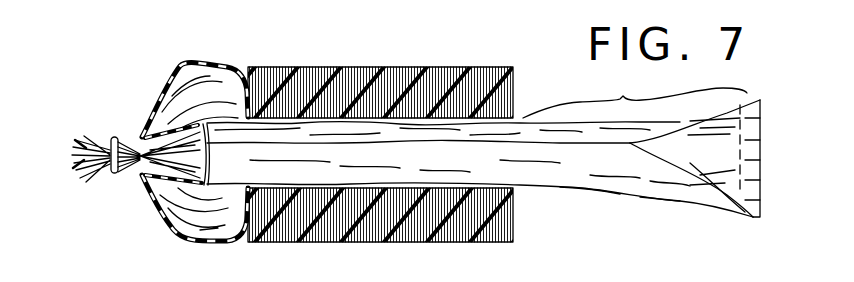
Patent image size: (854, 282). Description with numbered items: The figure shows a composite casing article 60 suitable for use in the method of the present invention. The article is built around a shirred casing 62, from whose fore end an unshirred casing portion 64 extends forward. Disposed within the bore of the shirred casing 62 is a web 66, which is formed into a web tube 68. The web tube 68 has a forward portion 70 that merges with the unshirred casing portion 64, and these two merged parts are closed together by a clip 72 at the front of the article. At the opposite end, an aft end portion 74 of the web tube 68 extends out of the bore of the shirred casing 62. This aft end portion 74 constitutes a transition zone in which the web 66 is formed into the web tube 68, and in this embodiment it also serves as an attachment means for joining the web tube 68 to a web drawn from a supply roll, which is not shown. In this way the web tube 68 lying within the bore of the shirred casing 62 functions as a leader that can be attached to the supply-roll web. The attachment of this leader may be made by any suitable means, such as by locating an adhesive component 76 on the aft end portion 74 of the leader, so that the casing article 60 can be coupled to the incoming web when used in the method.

The composite casing article 60 is at (321, 47).
The shirred casing 62 is at (388, 67).
The unshirred casing portion 64 is at (179, 66).
The web 66 is at (713, 153).
The web tube 68 is at (600, 190).
The forward portion 70 is at (165, 157).
The clip 72 is at (114, 137).
The aft end portion 74 is at (623, 96).
The adhesive component 76 is at (760, 125).